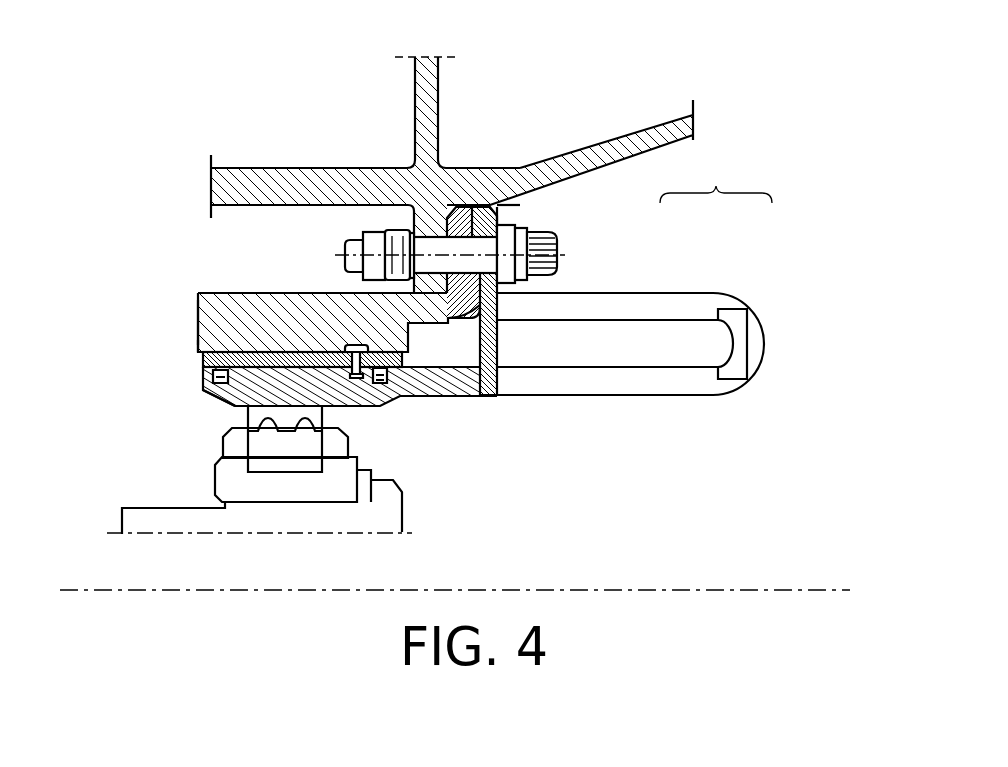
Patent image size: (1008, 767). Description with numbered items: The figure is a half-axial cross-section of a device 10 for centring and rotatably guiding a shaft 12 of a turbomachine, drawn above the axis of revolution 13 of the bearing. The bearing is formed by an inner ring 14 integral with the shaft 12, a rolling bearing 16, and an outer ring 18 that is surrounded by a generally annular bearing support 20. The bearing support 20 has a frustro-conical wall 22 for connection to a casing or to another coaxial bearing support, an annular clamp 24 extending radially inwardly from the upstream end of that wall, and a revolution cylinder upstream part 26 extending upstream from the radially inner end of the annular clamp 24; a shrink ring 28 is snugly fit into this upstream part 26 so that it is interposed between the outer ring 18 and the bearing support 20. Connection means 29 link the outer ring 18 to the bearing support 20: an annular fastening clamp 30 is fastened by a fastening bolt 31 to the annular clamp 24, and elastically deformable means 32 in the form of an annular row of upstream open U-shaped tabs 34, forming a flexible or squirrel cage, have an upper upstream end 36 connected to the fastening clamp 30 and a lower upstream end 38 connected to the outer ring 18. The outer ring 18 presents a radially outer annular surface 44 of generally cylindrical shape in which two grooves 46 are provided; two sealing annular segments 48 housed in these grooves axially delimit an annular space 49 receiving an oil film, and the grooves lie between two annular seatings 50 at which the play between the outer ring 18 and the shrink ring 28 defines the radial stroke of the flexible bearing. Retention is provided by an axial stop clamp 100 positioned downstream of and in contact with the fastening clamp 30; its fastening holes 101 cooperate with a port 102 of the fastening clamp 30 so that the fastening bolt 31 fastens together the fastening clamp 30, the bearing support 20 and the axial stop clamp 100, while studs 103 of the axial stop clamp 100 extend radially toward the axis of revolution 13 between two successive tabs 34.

The device 10 is at (185, 56).
The shaft 12 is at (363, 522).
The axis of revolution 13 is at (812, 590).
The inner ring 14 is at (222, 482).
The rolling bearing 16 is at (232, 445).
The outer ring 18 is at (228, 400).
The bearing support 20 is at (218, 290).
The frustro-conical wall 22 is at (597, 155).
The annular clamp 24 is at (415, 300).
The upstream part 26 is at (207, 310).
The shrink ring 28 is at (202, 342).
The connection means 29 is at (716, 180).
The fastening clamp 30 is at (497, 205).
The fastening bolt 31 is at (345, 250).
The elastically deformable means 32 is at (730, 293).
The tabs 34 is at (642, 307).
The upper upstream end 36 is at (498, 327).
The lower upstream end 38 is at (467, 382).
The radially outer annular surface 44 is at (270, 345).
The grooves 46 is at (220, 393).
The sealing annular segments 48 is at (213, 376).
The annular space 49 is at (335, 410).
The annular seatings 50 is at (202, 358).
The axial stop clamp 100 is at (478, 283).
The fastening holes 101 is at (502, 293).
The port 102 is at (425, 203).
The studs 103 is at (498, 352).